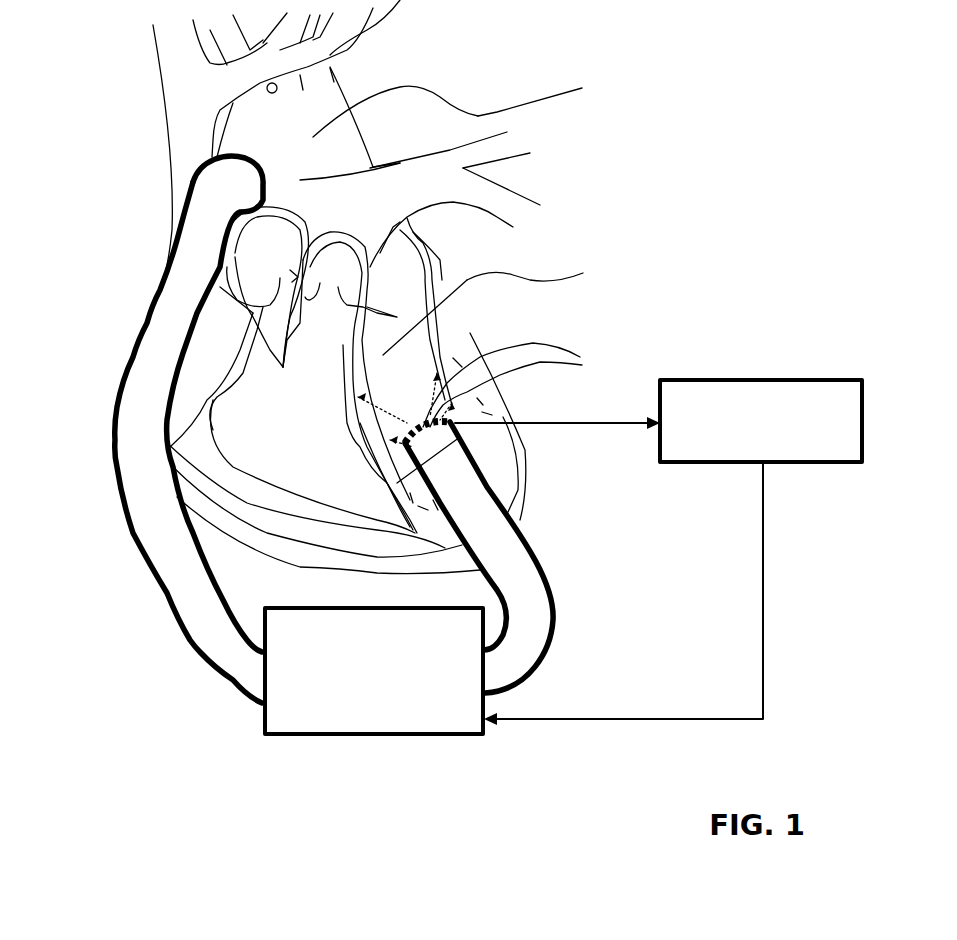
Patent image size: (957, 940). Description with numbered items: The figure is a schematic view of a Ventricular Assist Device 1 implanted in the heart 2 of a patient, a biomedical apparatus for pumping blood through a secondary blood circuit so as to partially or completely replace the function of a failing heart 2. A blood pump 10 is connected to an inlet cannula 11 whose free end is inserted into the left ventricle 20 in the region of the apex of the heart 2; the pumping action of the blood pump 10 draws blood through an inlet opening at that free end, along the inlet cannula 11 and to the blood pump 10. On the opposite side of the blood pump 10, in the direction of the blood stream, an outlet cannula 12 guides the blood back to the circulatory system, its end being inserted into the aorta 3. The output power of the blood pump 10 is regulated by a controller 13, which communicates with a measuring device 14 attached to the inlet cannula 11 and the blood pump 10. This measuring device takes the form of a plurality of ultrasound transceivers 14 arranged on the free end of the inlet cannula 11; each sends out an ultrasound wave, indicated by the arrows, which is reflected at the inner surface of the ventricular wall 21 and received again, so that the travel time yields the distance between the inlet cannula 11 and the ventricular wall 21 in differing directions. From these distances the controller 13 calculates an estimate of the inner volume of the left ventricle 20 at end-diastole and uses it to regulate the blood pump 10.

The Ventricular Assist Device 1 is at (313, 756).
The heart 2 is at (490, 331).
The aorta 3 is at (591, 86).
The blood pump 10 is at (432, 703).
The inlet cannula 11 is at (470, 513).
The outlet cannula 12 is at (167, 327).
The controller 13 is at (770, 403).
The ultrasound transceivers 14 is at (519, 385).
The left ventricle 20 is at (597, 271).
The ventricular wall 21 is at (477, 392).